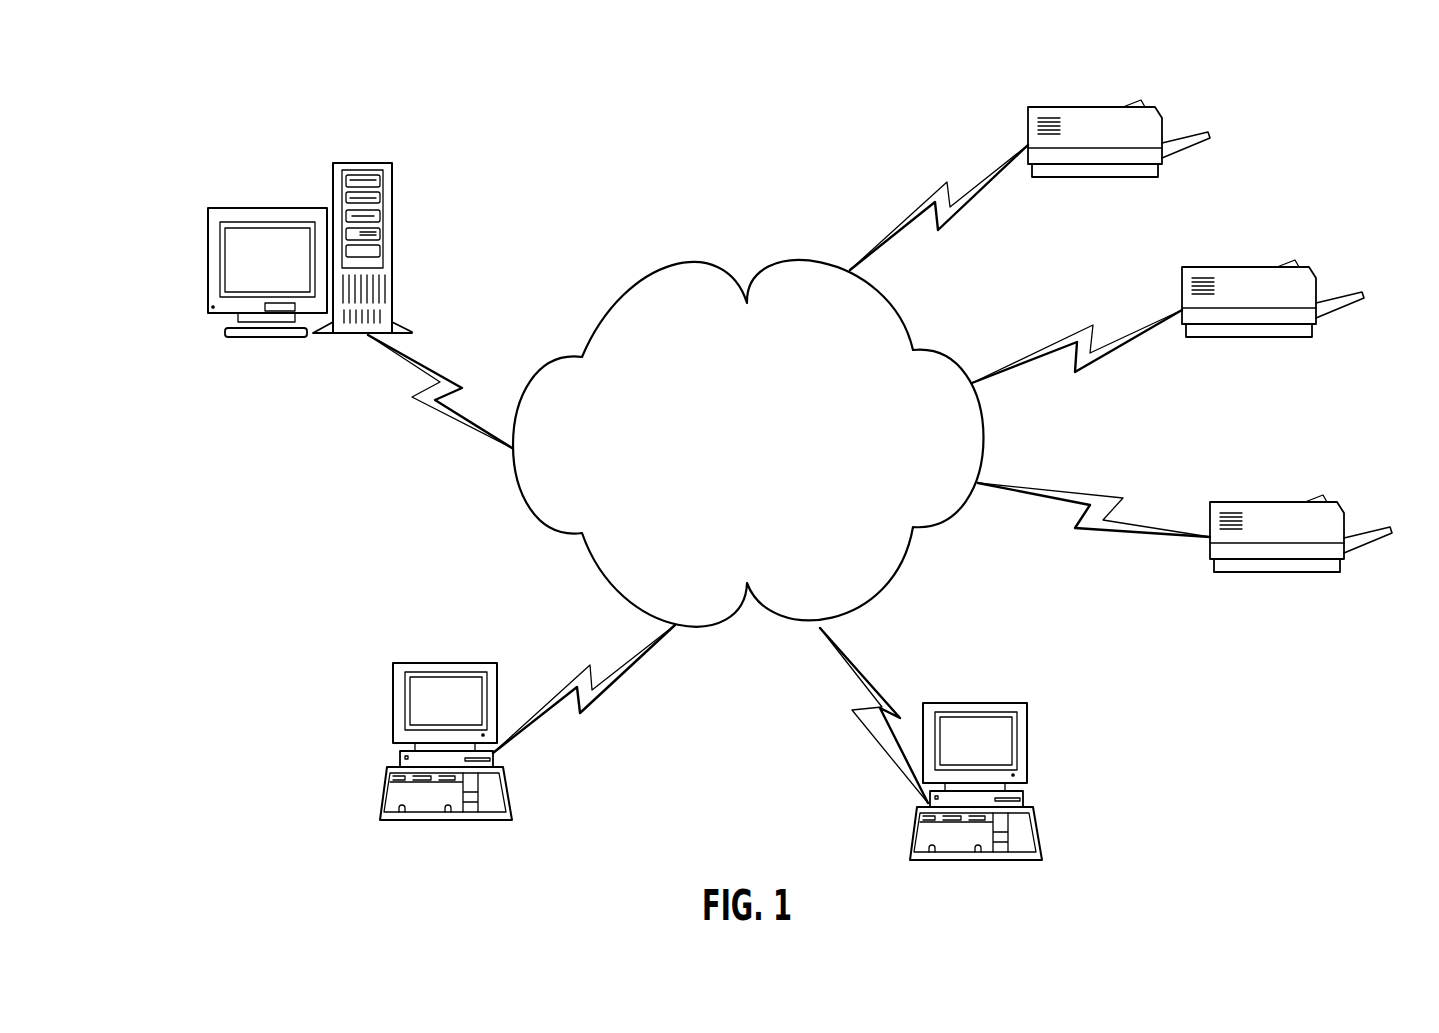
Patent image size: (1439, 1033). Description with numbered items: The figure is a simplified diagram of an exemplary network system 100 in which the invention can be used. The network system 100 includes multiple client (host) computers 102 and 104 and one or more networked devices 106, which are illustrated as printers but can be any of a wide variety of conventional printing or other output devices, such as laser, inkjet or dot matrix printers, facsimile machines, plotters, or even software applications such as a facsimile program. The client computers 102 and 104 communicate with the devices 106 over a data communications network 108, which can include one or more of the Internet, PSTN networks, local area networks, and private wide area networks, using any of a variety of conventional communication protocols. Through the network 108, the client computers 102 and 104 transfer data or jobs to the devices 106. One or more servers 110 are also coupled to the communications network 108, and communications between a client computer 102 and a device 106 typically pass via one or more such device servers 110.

The network system 100 is at (770, 133).
The client computer 102 is at (420, 663).
The client computer 104 is at (1030, 720).
The networked device 106 is at (1065, 106).
The data communications network 108 is at (722, 271).
The server 110 is at (410, 197).